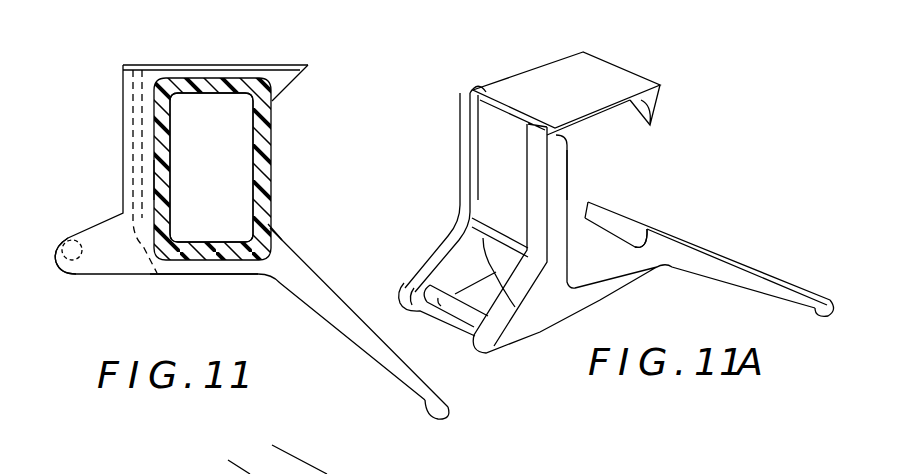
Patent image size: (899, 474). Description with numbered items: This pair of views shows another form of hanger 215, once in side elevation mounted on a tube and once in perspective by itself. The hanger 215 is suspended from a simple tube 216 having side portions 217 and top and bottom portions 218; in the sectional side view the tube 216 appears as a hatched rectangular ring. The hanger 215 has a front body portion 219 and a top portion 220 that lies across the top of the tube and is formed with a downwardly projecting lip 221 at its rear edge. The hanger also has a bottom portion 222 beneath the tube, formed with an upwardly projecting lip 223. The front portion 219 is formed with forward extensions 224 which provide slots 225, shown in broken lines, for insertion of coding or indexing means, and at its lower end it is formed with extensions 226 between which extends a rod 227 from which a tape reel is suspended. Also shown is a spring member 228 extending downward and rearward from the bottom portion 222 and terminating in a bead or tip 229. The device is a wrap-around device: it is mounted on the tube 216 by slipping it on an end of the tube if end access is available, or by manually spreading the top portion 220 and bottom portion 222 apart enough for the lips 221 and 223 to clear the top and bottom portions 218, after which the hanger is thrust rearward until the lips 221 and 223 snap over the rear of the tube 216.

In FIG. 11A, the hanger 215 is at (699, 177).
In FIG. 11, the tube 216 is at (290, 161).
In FIG. 11, the side portions 217 is at (273, 132).
In FIG. 11, the top and bottom portions 218 is at (232, 93).
In FIG. 11A, the front body portion 219 is at (568, 173).
In FIG. 11, the top portion 220 is at (237, 65).
In FIG. 11A, the top portion 220 is at (547, 80).
In FIG. 11, the downwardly projecting lip 221 is at (303, 77).
In FIG. 11A, the downwardly projecting lip 221 is at (655, 108).
In FIG. 11, the bottom portion 222 is at (202, 275).
In FIG. 11A, the bottom portion 222 is at (592, 295).
In FIG. 11, the upwardly projecting lip 223 is at (270, 228).
In FIG. 11A, the upwardly projecting lip 223 is at (647, 229).
In FIG. 11, the forward extensions 224 is at (123, 103).
In FIG. 11A, the forward extensions 224 is at (457, 162).
In FIG. 11, the slots 225 is at (136, 62).
In FIG. 11A, the slots 225 is at (478, 97).
In FIG. 11, the extensions 226 is at (128, 263).
In FIG. 11A, the extensions 226 is at (526, 317).
In FIG. 11, the rod 227 is at (72, 240).
In FIG. 11A, the rod 227 is at (426, 293).
In FIG. 11, the spring member 228 is at (313, 316).
In FIG. 11A, the spring member 228 is at (757, 263).
In FIG. 11, the bead or tip 229 is at (425, 405).
In FIG. 11A, the bead or tip 229 is at (835, 306).